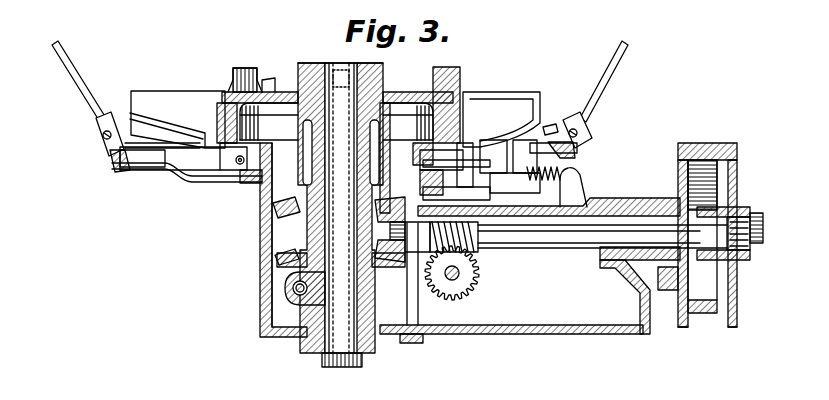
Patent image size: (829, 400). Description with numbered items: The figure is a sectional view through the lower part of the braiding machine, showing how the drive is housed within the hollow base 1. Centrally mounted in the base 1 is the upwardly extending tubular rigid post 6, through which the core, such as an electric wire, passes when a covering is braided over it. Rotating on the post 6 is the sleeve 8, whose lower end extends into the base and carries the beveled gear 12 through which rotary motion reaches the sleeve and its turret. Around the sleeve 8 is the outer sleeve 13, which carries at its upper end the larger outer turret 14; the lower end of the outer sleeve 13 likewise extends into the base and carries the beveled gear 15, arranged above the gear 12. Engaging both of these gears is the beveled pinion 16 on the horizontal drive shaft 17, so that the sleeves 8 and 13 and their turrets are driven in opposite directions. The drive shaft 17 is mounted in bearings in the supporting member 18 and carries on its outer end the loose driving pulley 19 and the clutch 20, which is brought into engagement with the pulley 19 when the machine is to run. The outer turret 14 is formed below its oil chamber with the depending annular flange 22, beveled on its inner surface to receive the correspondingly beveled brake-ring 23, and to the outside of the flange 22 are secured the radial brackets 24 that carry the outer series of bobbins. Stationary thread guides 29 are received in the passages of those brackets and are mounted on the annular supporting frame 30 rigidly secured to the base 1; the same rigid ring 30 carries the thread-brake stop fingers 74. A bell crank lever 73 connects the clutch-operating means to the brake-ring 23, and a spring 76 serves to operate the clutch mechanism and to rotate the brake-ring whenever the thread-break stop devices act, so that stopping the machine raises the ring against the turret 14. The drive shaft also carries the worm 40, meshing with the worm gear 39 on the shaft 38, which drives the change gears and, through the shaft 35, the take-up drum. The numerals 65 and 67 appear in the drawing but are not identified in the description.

The base 1 is at (270, 245).
The tubular rigid post 6 is at (336, 366).
The sleeve 8 is at (308, 65).
The beveled gear 12 is at (290, 266).
The outer sleeve 13 is at (307, 237).
The outer turret 14 is at (448, 76).
The beveled gear 15 is at (262, 200).
The beveled pinion 16 is at (405, 275).
The horizontal drive shaft 17 is at (525, 248).
The supporting member 18 is at (555, 333).
The loose driving pulley 19 is at (712, 146).
The clutch 20 is at (682, 172).
The depending annular flange 22 is at (463, 95).
The brake-ring 23 is at (450, 152).
The radial bracket 24 is at (172, 96).
The stationary thread guide 29 is at (85, 105).
The annular supporting frame 30 is at (128, 160).
The shaft 35 is at (296, 289).
The shaft 38 is at (452, 281).
The worm gear 39 is at (478, 291).
The worm 40 is at (465, 251).
The stud 65 is at (250, 92).
The boss 67 is at (300, 88).
The bell crank lever 73 is at (505, 140).
The thread-brake stop finger 74 is at (145, 145).
The spring 76 is at (575, 185).